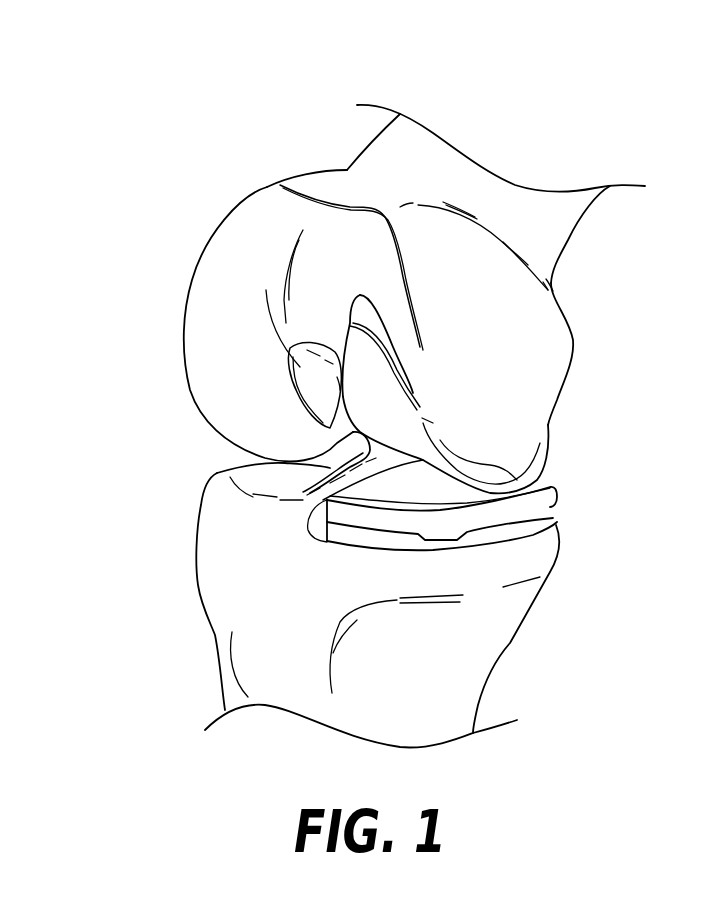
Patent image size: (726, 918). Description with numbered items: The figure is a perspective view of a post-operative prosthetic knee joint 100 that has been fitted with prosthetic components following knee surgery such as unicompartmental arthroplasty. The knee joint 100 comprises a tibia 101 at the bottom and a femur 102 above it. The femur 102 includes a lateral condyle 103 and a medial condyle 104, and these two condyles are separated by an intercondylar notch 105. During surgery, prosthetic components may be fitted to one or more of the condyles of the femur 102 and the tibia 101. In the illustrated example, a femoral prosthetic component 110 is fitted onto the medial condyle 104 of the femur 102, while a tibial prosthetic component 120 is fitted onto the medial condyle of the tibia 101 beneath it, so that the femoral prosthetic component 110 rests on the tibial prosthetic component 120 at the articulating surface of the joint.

The post-operative prosthetic knee joint 100 is at (75, 149).
The tibia 101 is at (227, 633).
The femur 102 is at (347, 170).
The lateral condyle 103 is at (220, 377).
The medial condyle 104 is at (523, 350).
The intercondylar notch 105 is at (266, 290).
The femoral prosthetic component 110 is at (400, 405).
The tibial prosthetic component 120 is at (557, 519).